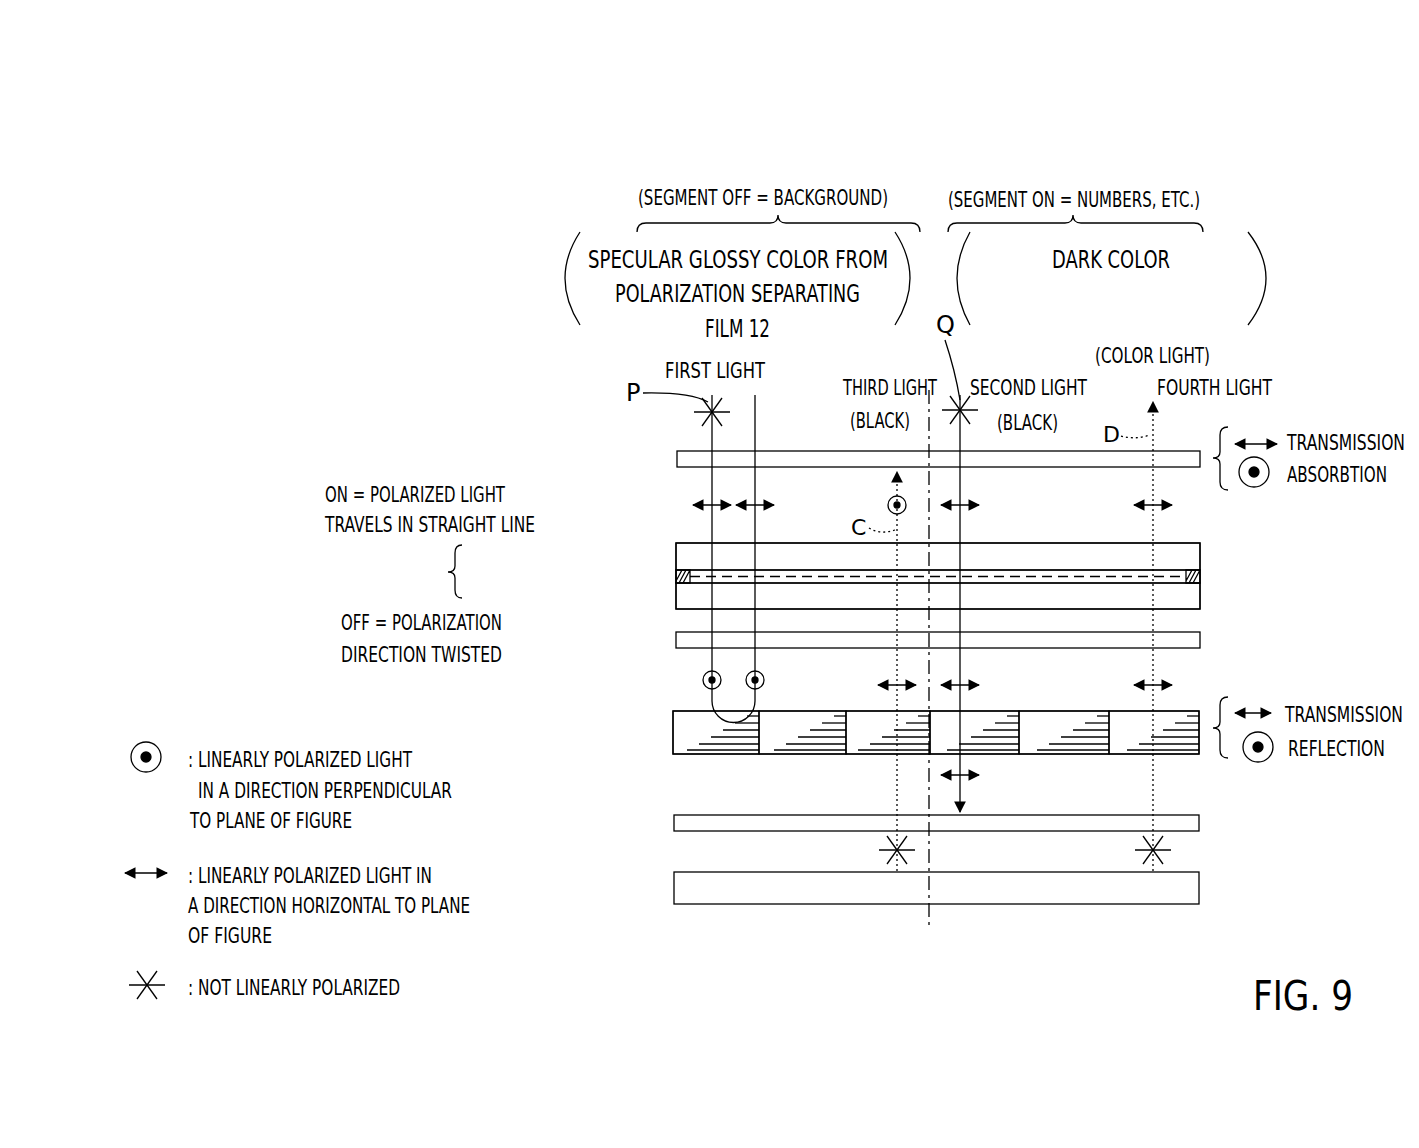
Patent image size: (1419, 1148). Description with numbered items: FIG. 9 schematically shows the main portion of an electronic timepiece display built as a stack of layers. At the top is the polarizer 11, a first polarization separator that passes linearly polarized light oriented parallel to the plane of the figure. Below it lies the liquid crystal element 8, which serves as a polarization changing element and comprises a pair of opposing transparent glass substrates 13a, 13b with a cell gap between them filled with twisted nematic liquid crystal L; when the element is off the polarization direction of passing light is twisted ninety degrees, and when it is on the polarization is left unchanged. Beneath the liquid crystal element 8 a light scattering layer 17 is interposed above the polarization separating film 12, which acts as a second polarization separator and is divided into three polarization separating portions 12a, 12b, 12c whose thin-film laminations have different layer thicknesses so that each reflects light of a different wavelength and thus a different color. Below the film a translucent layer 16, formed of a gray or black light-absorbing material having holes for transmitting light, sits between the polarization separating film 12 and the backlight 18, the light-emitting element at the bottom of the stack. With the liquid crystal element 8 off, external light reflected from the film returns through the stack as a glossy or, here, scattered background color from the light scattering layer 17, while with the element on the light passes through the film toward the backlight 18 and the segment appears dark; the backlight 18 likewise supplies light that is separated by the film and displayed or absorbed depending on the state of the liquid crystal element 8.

The liquid crystal element 8 is at (976, 576).
The polarizer 11 is at (918, 458).
The polarization separating film 12 is at (938, 750).
The polarization separating portion 12a is at (864, 750).
The polarization separating portion 12b is at (936, 750).
The polarization separating portion 12c is at (1039, 750).
The transparent glass substrate 13a is at (961, 547).
The transparent glass substrate 13b is at (962, 608).
The twisted nematic liquid crystal L is at (951, 583).
The translucent layer 16 is at (955, 825).
The light scattering layer 17 is at (948, 658).
The backlight 18 is at (955, 888).